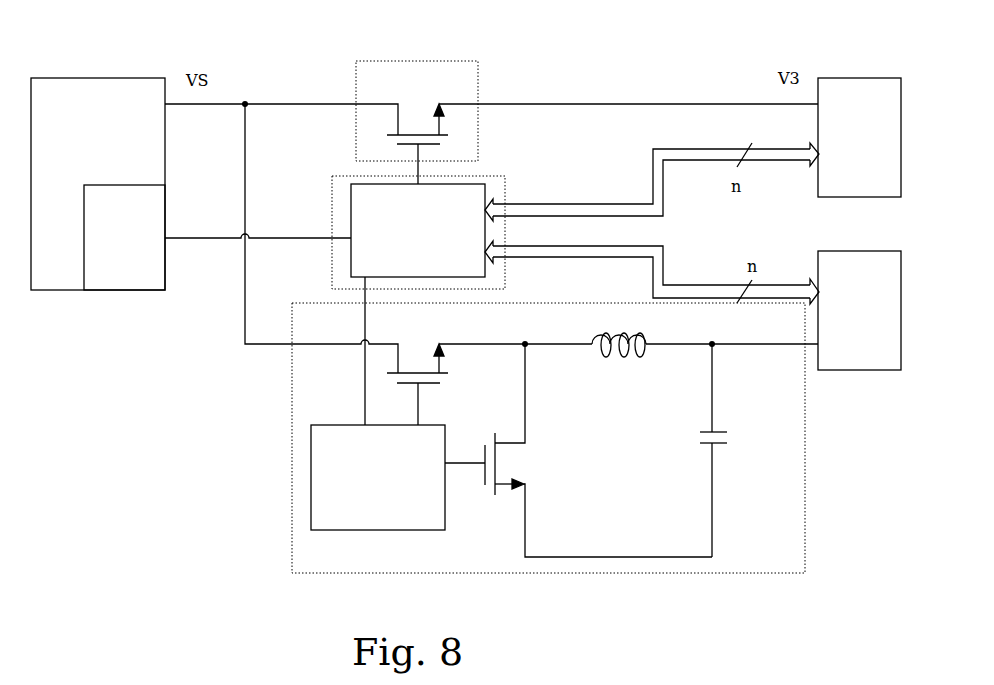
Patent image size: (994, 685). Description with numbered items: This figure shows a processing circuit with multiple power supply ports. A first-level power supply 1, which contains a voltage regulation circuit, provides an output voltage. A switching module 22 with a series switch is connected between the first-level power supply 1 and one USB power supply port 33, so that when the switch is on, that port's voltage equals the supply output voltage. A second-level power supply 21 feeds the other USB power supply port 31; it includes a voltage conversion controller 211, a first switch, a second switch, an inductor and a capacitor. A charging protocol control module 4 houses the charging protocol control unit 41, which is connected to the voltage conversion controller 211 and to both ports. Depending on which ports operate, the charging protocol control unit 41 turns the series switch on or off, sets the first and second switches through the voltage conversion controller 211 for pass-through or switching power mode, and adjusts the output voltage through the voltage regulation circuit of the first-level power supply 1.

The first-level power supply 1 is at (118, 78).
The switching module 22 is at (395, 61).
The charging protocol control module 4 is at (489, 176).
The charging protocol control unit 41 is at (359, 182).
The USB power supply port 33 is at (869, 78).
The USB power supply port 31 is at (877, 251).
The second-level power supply 21 is at (550, 438).
The voltage conversion controller 211 is at (308, 490).